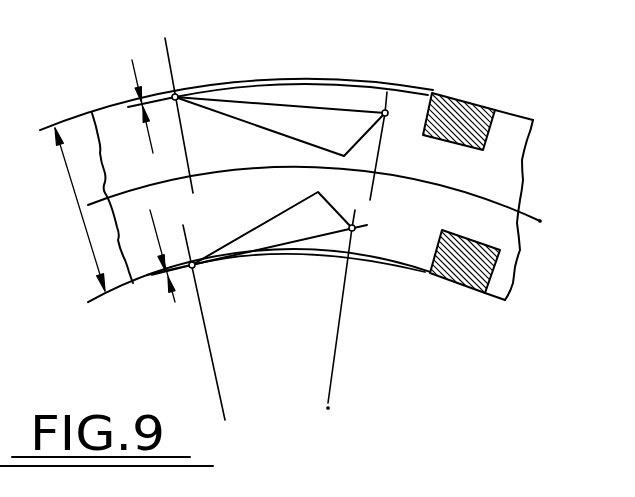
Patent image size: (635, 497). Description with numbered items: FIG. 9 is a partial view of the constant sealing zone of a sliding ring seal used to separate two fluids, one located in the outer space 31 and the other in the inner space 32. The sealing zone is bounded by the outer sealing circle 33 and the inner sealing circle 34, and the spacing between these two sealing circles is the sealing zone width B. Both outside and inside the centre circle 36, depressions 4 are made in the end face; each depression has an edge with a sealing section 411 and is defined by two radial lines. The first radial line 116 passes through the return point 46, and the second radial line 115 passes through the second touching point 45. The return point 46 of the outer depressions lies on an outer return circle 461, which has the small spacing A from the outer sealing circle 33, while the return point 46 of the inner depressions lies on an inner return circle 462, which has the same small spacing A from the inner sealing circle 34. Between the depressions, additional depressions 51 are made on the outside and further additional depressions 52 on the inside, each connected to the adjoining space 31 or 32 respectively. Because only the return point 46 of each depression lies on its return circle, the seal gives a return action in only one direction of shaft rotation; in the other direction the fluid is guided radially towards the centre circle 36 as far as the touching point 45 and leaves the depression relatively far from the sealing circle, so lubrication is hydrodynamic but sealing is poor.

The space 31 is at (319, 161).
The space 32 is at (296, 326).
The outer sealing circle 33 is at (407, 88).
The inner sealing circle 34 is at (415, 272).
The centre circle 36 is at (507, 205).
The depression 4 is at (266, 167).
The sealing section 411 is at (308, 105).
The second touching point 45 is at (388, 118).
The return point 46 is at (233, 330).
The outer return circle 461 is at (237, 83).
The inner return circle 462 is at (382, 260).
The additional depression 51 is at (470, 125).
The further additional depression 52 is at (482, 292).
The second radial line 115 is at (378, 160).
The first radial line 116 is at (185, 145).
The spacing A is at (142, 192).
The sealing zone width B is at (76, 197).